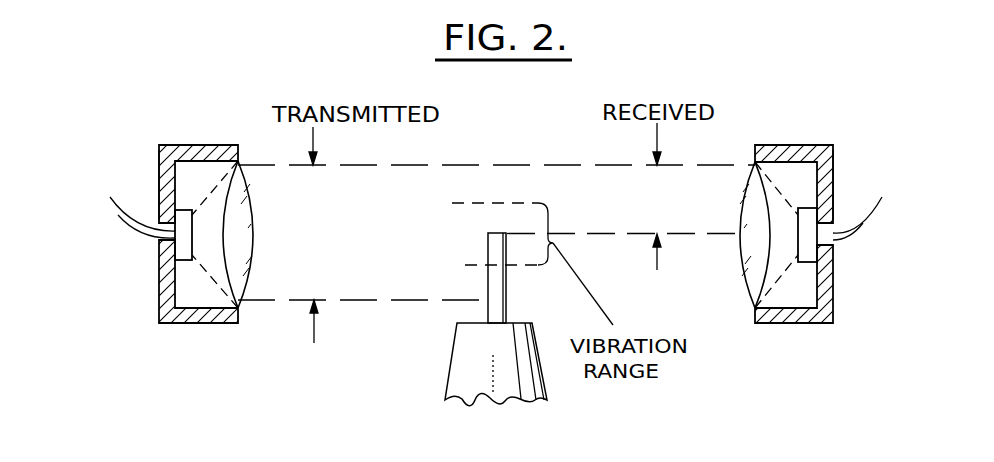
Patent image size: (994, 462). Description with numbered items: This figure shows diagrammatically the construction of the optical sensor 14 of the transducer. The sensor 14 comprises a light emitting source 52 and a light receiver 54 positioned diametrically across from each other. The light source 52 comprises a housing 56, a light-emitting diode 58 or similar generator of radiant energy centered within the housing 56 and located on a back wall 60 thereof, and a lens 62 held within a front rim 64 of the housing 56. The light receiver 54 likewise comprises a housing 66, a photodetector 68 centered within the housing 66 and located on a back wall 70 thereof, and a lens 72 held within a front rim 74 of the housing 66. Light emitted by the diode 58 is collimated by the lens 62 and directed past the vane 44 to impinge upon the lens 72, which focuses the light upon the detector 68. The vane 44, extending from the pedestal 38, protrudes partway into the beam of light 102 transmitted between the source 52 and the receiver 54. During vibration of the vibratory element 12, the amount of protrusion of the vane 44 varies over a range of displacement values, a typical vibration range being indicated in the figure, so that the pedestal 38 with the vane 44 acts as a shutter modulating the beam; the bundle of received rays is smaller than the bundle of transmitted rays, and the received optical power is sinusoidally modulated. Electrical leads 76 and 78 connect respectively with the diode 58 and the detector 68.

The vibratory element 12 is at (468, 402).
The sensor 14 is at (152, 138).
The pedestal 38 is at (459, 380).
The vane 44 is at (488, 283).
The light emitting source 52 is at (204, 242).
The light receiver 54 is at (788, 244).
The housing 56 is at (200, 324).
The light-emitting diode 58 is at (188, 262).
The back wall 60 is at (159, 172).
The lens 62 is at (256, 230).
The front rim 64 is at (240, 152).
The housing 66 is at (818, 325).
The photodetector 68 is at (810, 262).
The back wall 70 is at (835, 170).
The lens 72 is at (740, 258).
The front rim 74 is at (753, 152).
The electrical leads 76 is at (111, 200).
The electrical leads 78 is at (877, 205).
The beam of light 102 is at (566, 162).